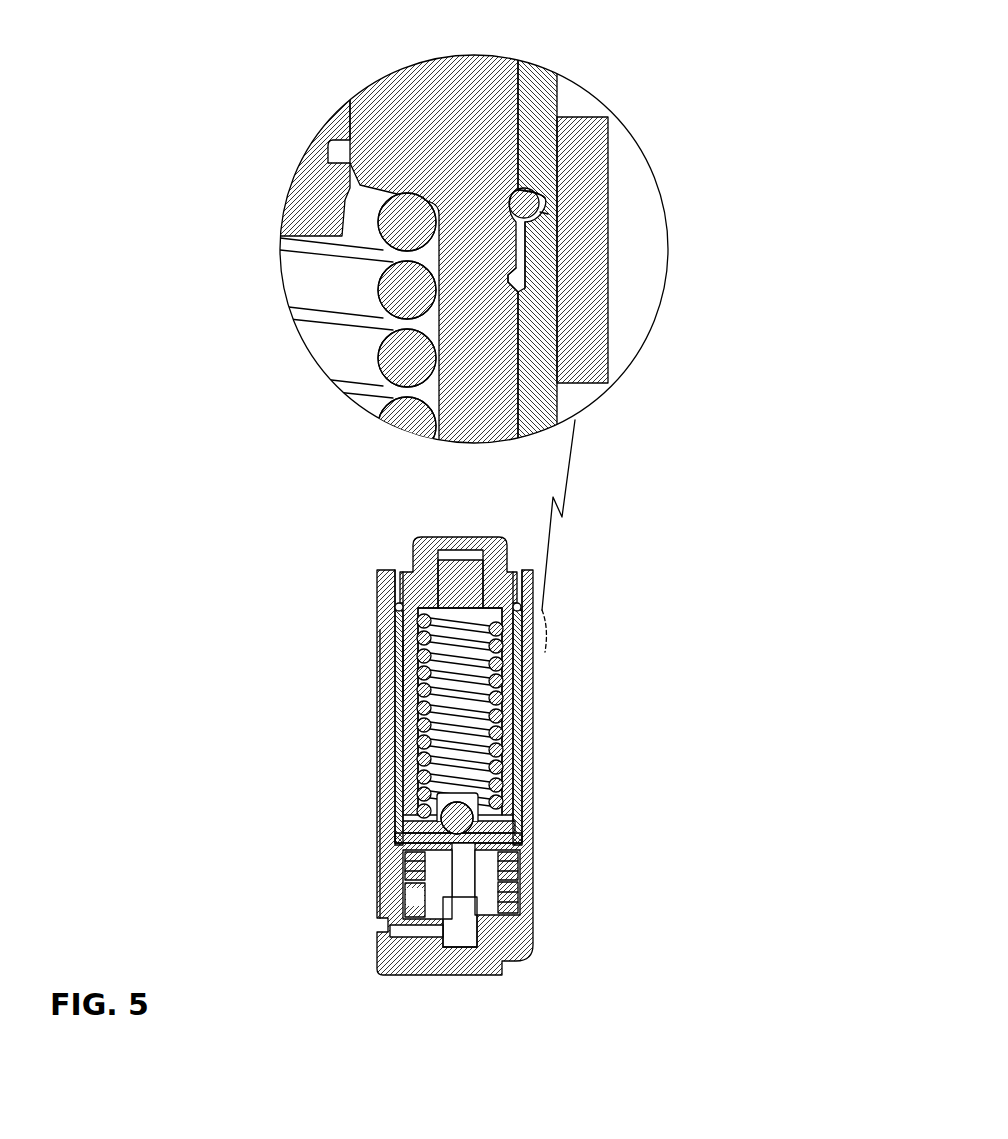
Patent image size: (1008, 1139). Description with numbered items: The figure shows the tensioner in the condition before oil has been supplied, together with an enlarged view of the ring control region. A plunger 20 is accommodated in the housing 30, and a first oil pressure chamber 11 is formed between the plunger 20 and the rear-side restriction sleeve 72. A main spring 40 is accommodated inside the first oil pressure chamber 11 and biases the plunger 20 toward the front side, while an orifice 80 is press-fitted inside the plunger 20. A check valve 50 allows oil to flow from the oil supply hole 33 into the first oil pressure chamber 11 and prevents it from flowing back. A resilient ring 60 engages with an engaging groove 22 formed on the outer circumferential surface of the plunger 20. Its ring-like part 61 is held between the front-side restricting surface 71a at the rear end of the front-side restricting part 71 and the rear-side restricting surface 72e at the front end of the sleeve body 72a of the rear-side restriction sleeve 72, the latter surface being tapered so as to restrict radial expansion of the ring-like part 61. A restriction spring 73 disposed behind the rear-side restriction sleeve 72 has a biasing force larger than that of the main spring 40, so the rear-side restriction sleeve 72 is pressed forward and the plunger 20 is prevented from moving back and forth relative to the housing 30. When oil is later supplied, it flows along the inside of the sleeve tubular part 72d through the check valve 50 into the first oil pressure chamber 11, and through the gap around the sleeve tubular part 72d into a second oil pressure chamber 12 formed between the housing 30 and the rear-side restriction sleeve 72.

The plunger 20 is at (430, 95).
The front-side restricting part 71 is at (540, 100).
The ring-like part 61 is at (528, 194).
The resilient ring 60 is at (471, 325).
The front-side restricting surface 71a is at (546, 199).
The rear-side restricting surface 72e is at (548, 208).
The sleeve body 72a is at (553, 253).
The rear-side restriction sleeve 72 is at (524, 532).
The engaging groove 22 is at (518, 279).
The housing 30 is at (595, 362).
The orifice 80 is at (460, 565).
The main spring 40 is at (425, 722).
The first oil pressure chamber 11 is at (450, 724).
The check valve 50 is at (506, 815).
The restriction spring 73 is at (520, 855).
The second oil pressure chamber 12 is at (405, 906).
The sleeve tubular part 72d is at (513, 888).
The oil supply hole 33 is at (470, 905).